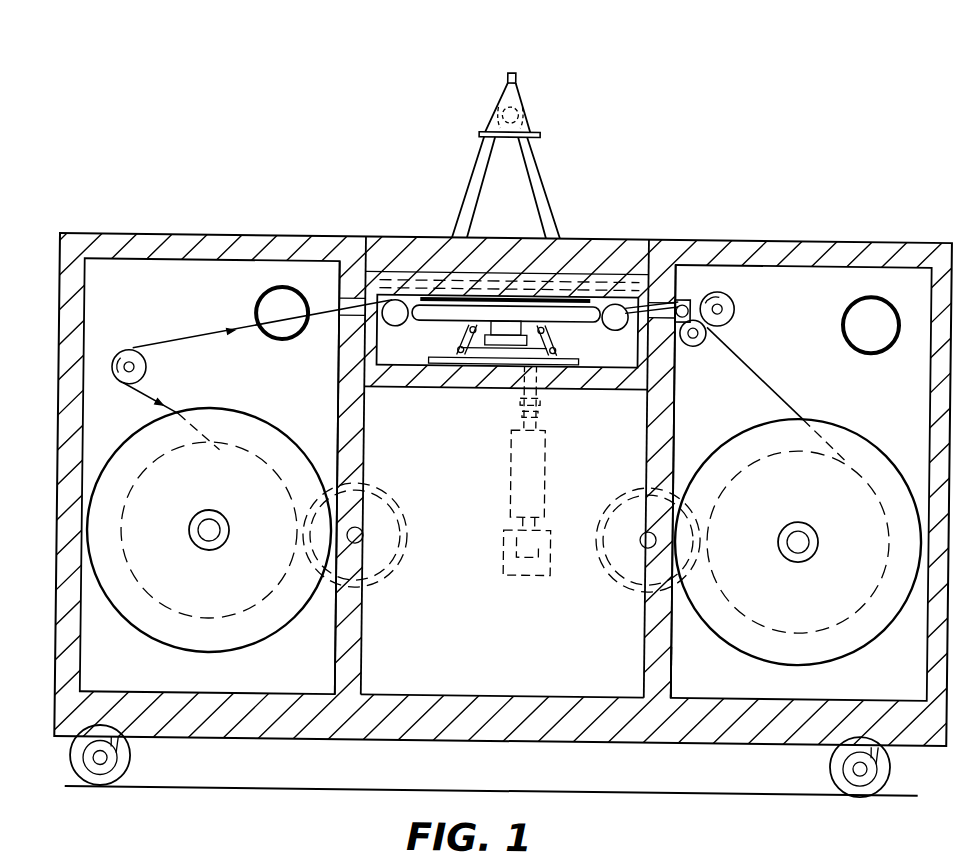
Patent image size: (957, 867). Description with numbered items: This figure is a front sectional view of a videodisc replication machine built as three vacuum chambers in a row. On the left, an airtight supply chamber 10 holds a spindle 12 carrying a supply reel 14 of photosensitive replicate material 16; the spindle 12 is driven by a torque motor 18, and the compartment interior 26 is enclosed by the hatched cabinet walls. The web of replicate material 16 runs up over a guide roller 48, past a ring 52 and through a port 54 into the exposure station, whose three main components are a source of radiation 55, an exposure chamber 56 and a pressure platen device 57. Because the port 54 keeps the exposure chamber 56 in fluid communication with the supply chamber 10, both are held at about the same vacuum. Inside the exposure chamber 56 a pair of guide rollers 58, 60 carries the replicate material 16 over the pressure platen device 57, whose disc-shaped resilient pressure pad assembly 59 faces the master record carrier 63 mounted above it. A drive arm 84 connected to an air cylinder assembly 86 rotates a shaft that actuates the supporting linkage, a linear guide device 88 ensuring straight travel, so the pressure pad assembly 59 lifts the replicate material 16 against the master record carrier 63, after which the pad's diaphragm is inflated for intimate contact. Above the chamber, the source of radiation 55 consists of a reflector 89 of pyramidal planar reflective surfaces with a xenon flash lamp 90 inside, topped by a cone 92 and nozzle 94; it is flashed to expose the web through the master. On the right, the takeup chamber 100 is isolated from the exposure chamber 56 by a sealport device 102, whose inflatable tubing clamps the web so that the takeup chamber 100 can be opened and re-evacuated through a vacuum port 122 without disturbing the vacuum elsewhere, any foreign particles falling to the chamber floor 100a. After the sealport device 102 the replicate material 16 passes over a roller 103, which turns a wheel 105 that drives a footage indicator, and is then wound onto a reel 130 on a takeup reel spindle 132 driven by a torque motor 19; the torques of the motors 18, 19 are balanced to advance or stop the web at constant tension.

The supply chamber 10 is at (90, 670).
The spindle 12 is at (215, 518).
The supply reel 14 is at (307, 610).
The replicate material 16 is at (165, 397).
The torque motor 18 is at (395, 501).
The torque motor 19 is at (615, 497).
The supply compartment 26 is at (138, 282).
The guide roller 48 is at (150, 376).
The guide ring 52 is at (293, 300).
The port 54 is at (351, 313).
The source of radiation 55 is at (515, 133).
The exposure chamber 56 is at (606, 355).
The pressure platen device 57 is at (446, 331).
The guide roller 58 is at (399, 296).
The pressure pad assembly 59 is at (504, 310).
The guide roller 60 is at (613, 314).
The master record carrier 63 is at (598, 284).
The drive arm 84 is at (497, 385).
The air cylinder assembly 86 is at (551, 454).
The linear guide device 88 is at (542, 370).
The reflector 89 is at (529, 200).
The xenon flash lamp 90 is at (524, 111).
The hopper cone 92 is at (496, 90).
The hopper nozzle 94 is at (510, 70).
The takeup chamber 100 is at (870, 413).
The chamber floor 100a is at (717, 683).
The sealport device 102 is at (687, 277).
The roller 103 is at (693, 341).
The wheel 105 is at (737, 302).
The vacuum port 122 is at (857, 309).
The reel 130 is at (762, 422).
The takeup reel spindle 132 is at (794, 532).